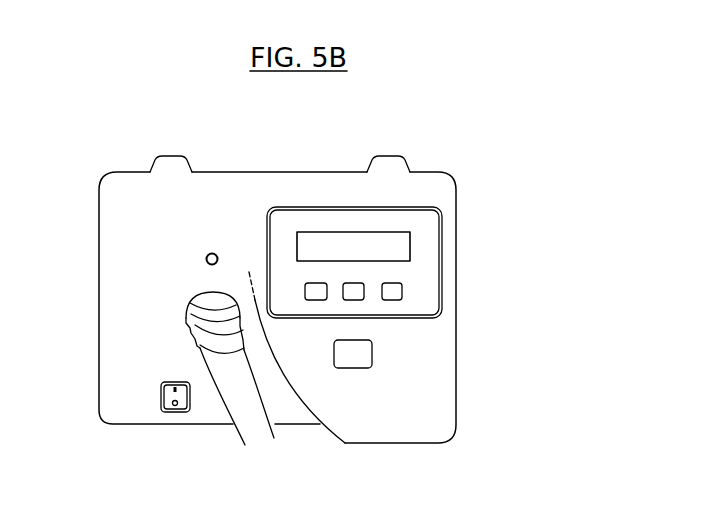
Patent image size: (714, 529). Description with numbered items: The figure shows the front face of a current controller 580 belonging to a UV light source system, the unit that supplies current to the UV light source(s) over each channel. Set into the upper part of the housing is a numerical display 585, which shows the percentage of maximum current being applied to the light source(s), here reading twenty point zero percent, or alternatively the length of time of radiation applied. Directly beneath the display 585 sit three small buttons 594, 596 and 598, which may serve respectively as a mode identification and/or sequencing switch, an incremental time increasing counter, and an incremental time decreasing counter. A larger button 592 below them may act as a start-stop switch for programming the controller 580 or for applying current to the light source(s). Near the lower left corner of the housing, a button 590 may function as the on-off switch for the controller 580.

The current controller 580 is at (456, 358).
The numerical display 585 is at (410, 243).
The button 598 is at (402, 289).
The button 594 is at (313, 300).
The button 596 is at (364, 293).
The button 592 is at (372, 360).
The button 590 is at (178, 412).